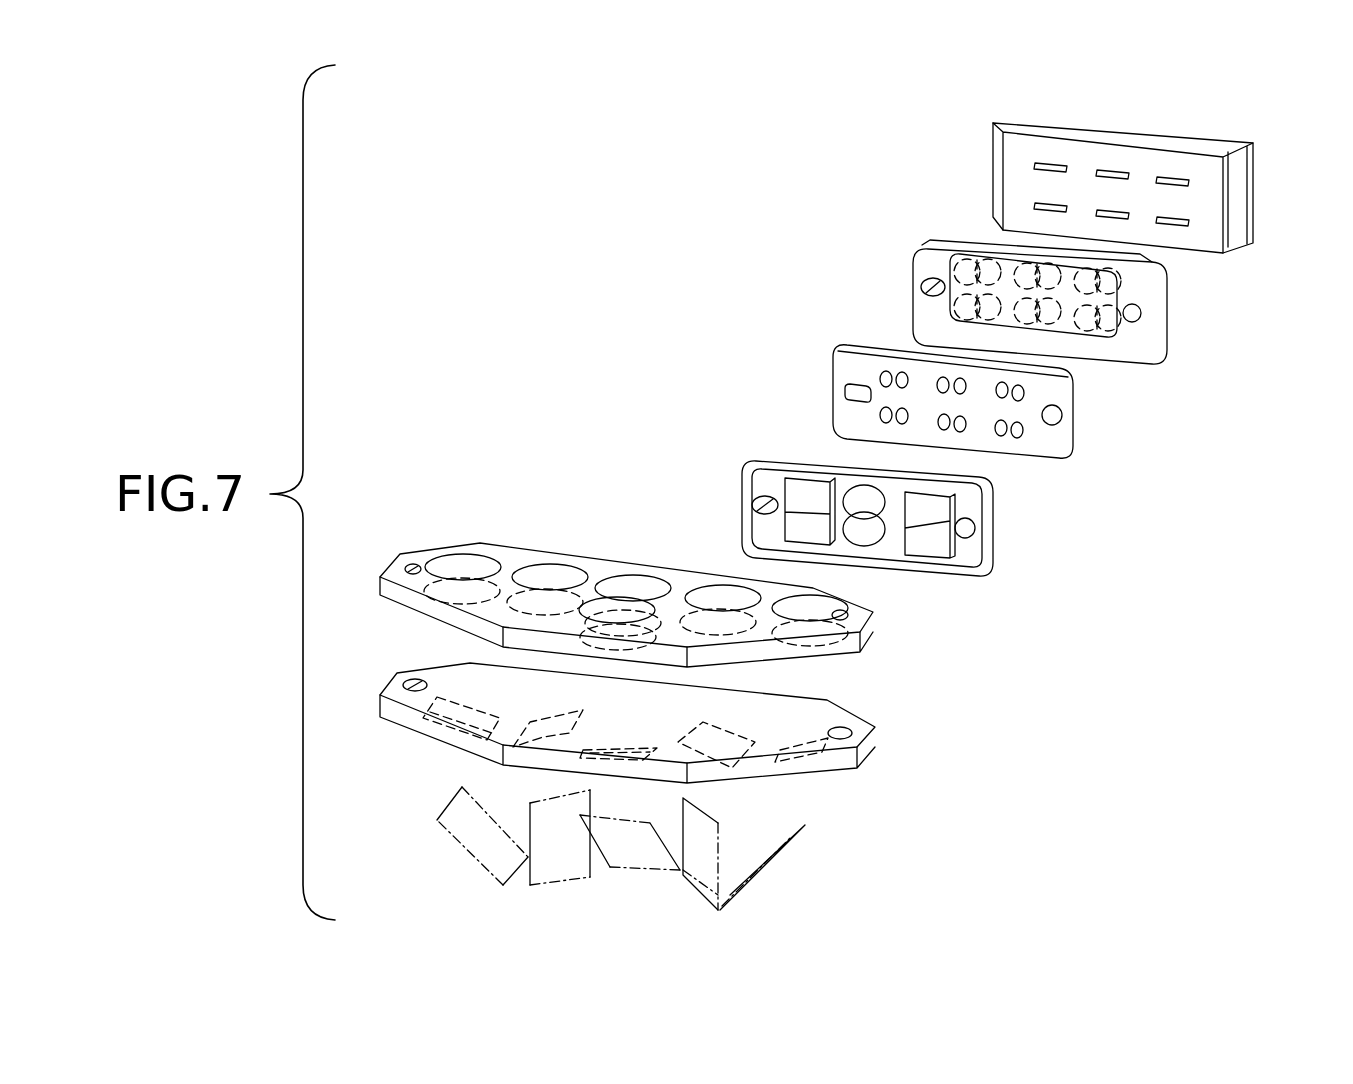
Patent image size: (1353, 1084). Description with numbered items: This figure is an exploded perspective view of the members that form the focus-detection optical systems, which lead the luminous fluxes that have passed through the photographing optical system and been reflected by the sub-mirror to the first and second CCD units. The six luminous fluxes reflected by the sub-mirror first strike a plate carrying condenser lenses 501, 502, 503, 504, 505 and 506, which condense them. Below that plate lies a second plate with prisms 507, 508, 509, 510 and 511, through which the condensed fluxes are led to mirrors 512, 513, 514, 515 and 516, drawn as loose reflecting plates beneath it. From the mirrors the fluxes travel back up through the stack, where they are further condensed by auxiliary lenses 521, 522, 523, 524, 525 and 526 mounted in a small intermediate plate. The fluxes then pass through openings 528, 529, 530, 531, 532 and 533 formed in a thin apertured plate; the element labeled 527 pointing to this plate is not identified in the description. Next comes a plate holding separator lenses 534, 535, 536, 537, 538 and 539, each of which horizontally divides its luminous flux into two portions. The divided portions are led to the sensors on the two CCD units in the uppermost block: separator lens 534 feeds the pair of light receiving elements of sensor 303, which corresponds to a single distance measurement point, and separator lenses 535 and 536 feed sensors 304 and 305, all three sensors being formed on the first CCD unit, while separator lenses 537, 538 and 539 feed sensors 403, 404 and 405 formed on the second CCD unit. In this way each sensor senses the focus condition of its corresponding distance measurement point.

The sensor 303 is at (1051, 163).
The sensor 304 is at (1112, 171).
The sensor 305 is at (1172, 177).
The sensor 403 is at (1050, 205).
The sensor 404 is at (1130, 212).
The sensor 405 is at (1189, 223).
The condenser lens 501 is at (527, 573).
The condenser lens 502 is at (600, 598).
The condenser lens 503 is at (707, 595).
The condenser lens 504 is at (452, 560).
The condenser lens 505 is at (653, 580).
The condenser lens 506 is at (872, 615).
The prism 507 is at (430, 733).
The prism 508 is at (540, 738).
The prism 509 is at (628, 747).
The prism 510 is at (750, 740).
The prism 511 is at (822, 767).
The mirror 512 is at (450, 837).
The mirror 513 is at (552, 885).
The mirror 514 is at (617, 870).
The mirror 515 is at (700, 888).
The mirror 516 is at (790, 870).
The auxiliary lens 521 is at (793, 493).
The auxiliary lens 522 is at (847, 493).
The auxiliary lens 523 is at (940, 512).
The auxiliary lens 524 is at (790, 525).
The auxiliary lens 525 is at (867, 548).
The auxiliary lens 526 is at (933, 550).
The contact plate 527 is at (1099, 440).
The opening 528 is at (882, 378).
The opening 529 is at (940, 382).
The opening 530 is at (1022, 393).
The opening 531 is at (893, 424).
The opening 532 is at (962, 430).
The opening 533 is at (1020, 436).
The separator lens 534 is at (962, 268).
The separator lens 535 is at (1005, 265).
The separator lens 536 is at (1095, 290).
The separator lens 537 is at (937, 265).
The separator lens 538 is at (1062, 345).
The separator lens 539 is at (1070, 342).